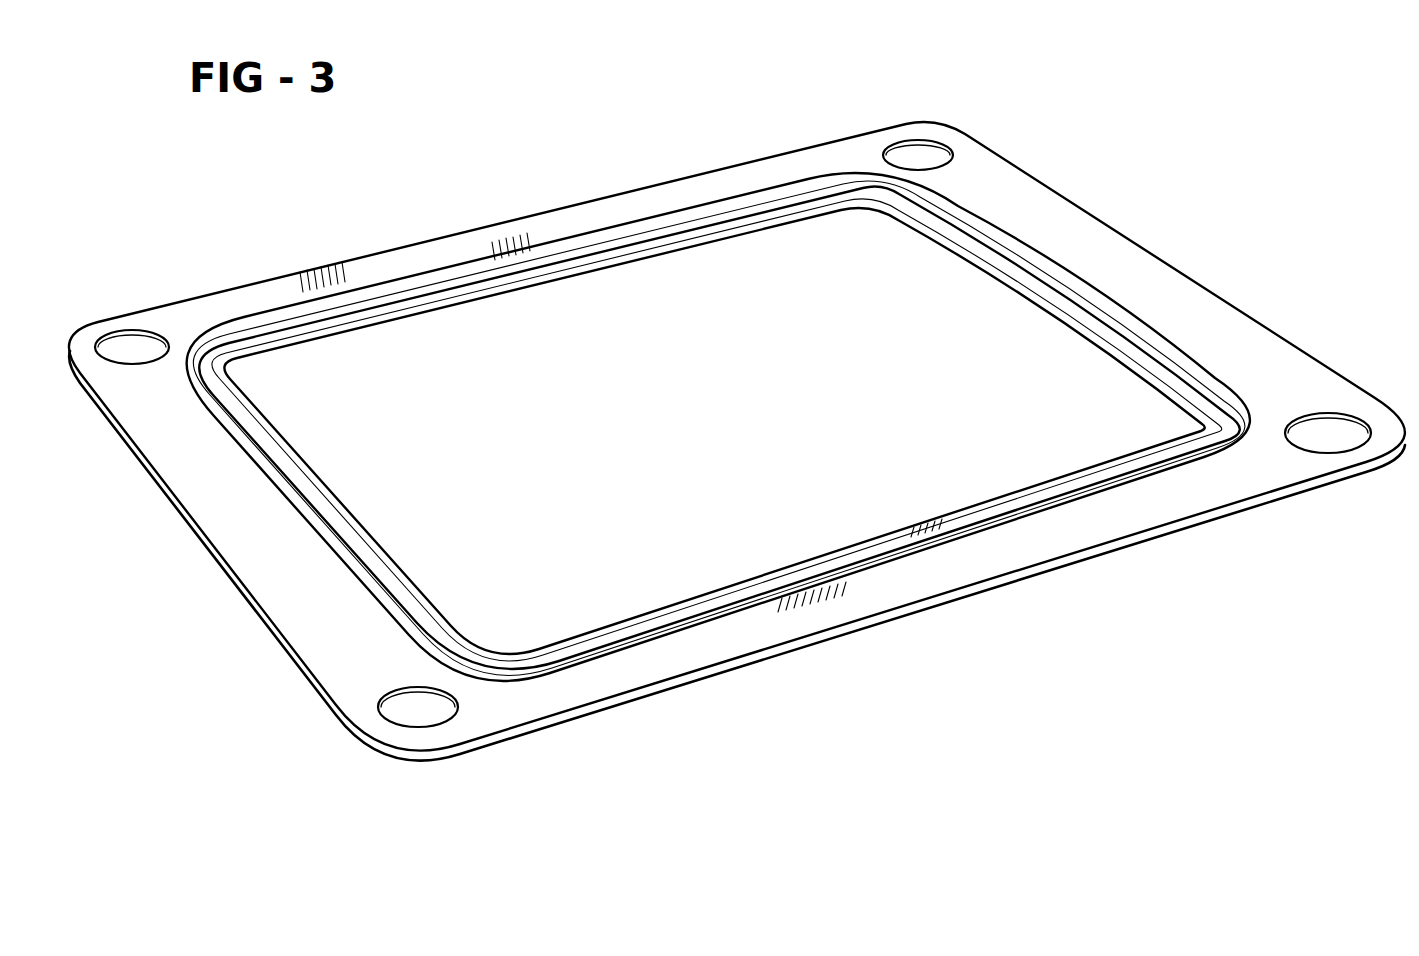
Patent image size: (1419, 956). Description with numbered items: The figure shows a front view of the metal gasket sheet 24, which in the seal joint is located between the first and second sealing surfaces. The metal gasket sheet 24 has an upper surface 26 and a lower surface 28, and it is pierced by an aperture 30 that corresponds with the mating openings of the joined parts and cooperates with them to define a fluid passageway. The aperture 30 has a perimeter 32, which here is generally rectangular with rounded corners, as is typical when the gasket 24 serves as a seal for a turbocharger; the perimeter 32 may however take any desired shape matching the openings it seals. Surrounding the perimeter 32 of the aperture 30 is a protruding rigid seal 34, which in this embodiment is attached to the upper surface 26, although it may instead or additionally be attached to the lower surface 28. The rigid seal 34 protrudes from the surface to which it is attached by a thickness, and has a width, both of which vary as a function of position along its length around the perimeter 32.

The metal gasket sheet 24 is at (1207, 290).
The upper surface 26 is at (1285, 380).
The lower surface 28 is at (1352, 482).
The aperture 30 is at (926, 322).
The perimeter 32 is at (809, 216).
The protruding rigid seal 34 is at (1090, 292).